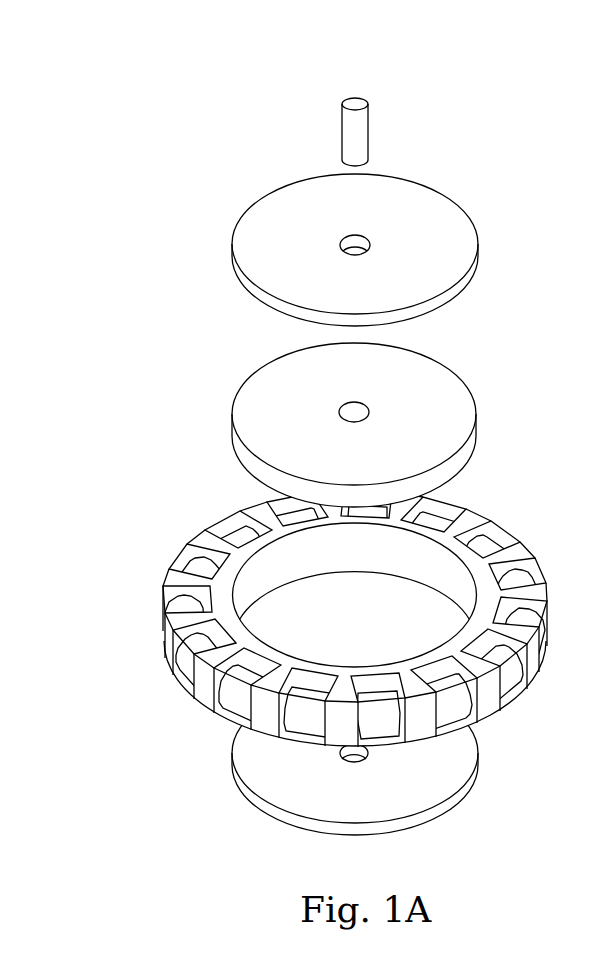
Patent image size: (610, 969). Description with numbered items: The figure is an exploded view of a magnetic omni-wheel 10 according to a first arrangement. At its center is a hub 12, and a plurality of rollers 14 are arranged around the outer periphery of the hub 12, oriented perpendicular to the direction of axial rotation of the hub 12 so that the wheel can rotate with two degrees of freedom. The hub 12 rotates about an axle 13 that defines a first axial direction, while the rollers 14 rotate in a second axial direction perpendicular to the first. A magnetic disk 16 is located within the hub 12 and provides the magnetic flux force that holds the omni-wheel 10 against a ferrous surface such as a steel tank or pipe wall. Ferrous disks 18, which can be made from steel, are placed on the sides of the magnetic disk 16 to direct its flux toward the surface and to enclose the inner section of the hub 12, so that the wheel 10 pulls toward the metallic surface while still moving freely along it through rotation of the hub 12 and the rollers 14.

The magnetic omni-wheel 10 is at (150, 275).
The hub 12 is at (473, 513).
The axle 13 is at (367, 118).
The rollers 14 is at (547, 590).
The magnetic disk 16 is at (465, 382).
The ferrous disks 18 is at (478, 252).